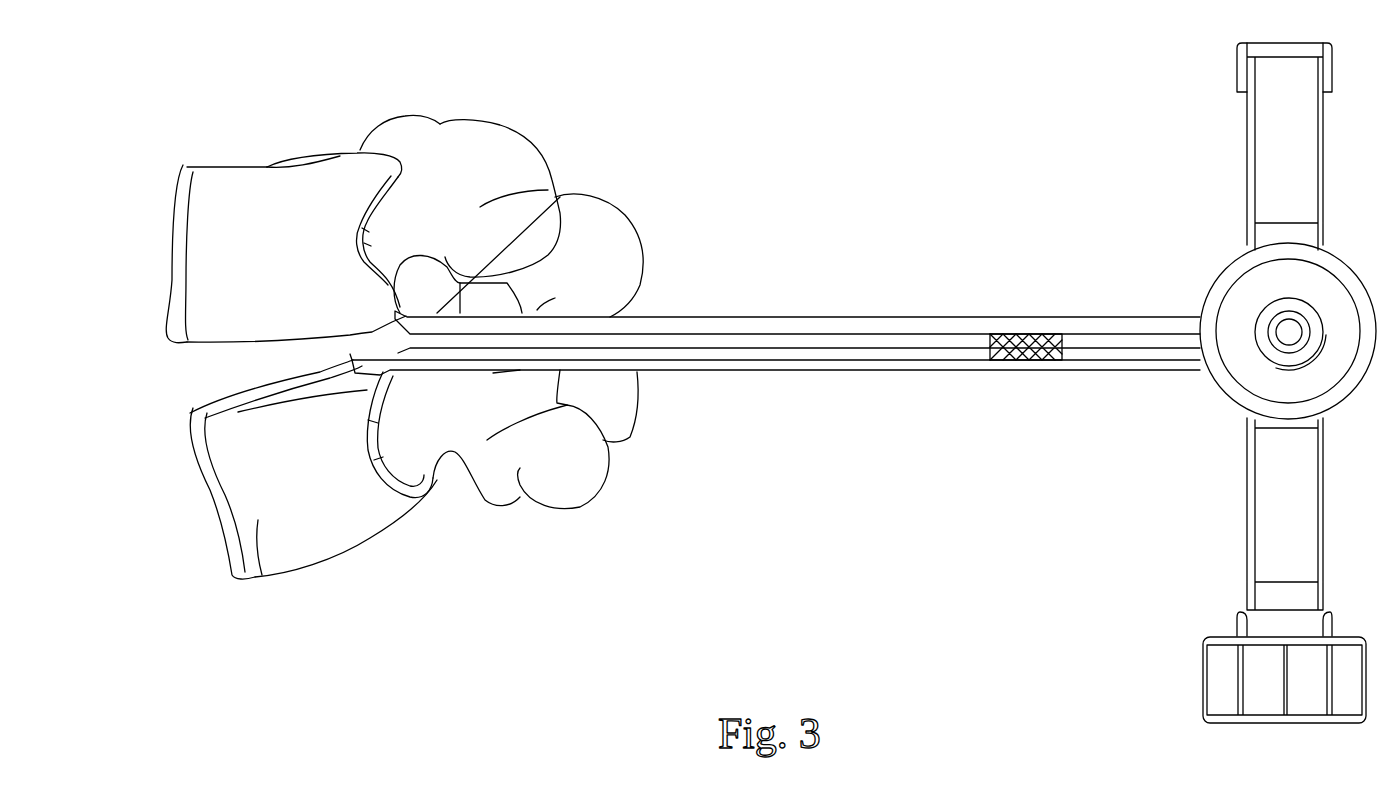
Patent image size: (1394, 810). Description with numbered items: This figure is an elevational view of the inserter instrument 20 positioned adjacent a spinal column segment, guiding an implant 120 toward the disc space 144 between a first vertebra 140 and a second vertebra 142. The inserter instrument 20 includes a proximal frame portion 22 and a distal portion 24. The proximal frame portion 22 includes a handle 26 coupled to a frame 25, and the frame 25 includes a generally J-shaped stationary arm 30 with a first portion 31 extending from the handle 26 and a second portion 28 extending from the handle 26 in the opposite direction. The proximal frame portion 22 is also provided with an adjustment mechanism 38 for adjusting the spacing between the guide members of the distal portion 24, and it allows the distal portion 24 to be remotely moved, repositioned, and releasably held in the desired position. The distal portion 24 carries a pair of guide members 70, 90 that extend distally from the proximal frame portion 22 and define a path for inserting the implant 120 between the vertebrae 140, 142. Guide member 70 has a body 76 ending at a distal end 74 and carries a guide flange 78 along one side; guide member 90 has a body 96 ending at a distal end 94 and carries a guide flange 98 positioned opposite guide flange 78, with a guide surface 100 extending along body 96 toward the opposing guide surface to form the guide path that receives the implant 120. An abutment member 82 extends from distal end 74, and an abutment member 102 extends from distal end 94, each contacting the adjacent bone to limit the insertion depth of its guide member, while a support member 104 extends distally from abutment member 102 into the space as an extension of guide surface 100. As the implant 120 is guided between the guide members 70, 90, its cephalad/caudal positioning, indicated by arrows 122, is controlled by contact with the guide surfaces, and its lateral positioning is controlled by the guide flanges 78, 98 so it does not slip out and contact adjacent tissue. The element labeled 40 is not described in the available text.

The inserter instrument 20 is at (1025, 200).
The proximal frame portion 22 is at (1223, 386).
The distal portion 24 is at (747, 432).
The frame 25 is at (1237, 184).
The handle 26 is at (1233, 265).
The second portion 28 is at (1236, 144).
The stationary arm 30 is at (1235, 429).
The first portion 31 is at (1258, 522).
The adjustment mechanism 38 is at (1203, 690).
The end cap 40 is at (1237, 66).
The guide member 70 is at (895, 310).
The distal end 74 is at (567, 213).
The body 76 is at (756, 317).
The guide flange 78 is at (690, 317).
The abutment member 82 is at (410, 303).
The guide member 90 is at (907, 370).
The distal end 94 is at (440, 370).
The body 96 is at (767, 372).
The guide flange 98 is at (703, 372).
The guide surface 100 is at (860, 370).
The abutment member 102 is at (385, 373).
The support member 104 is at (352, 360).
The implant 120 is at (1020, 370).
The arrows 122 is at (833, 143).
The first vertebra 140 is at (212, 190).
The second vertebra 142 is at (257, 575).
The disc space 144 is at (147, 373).